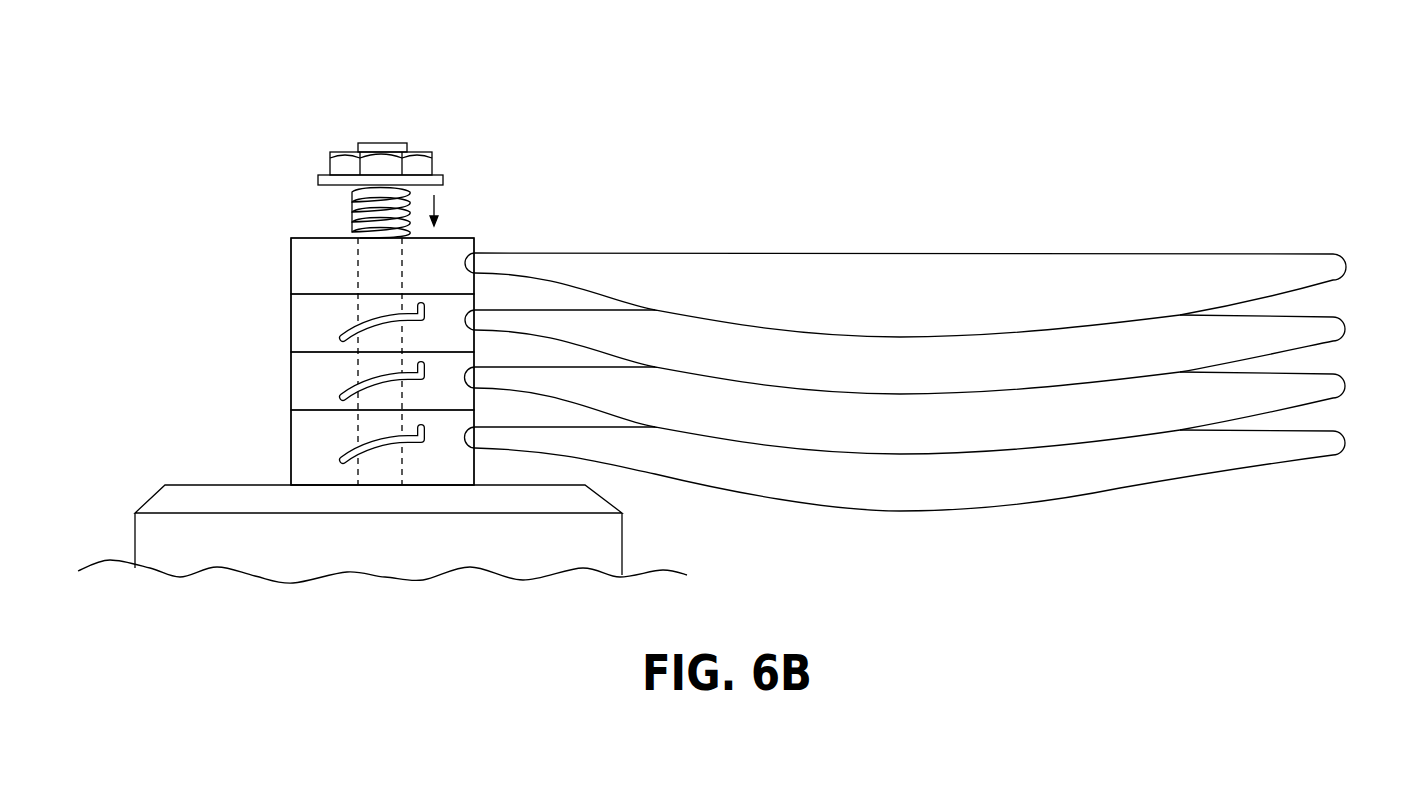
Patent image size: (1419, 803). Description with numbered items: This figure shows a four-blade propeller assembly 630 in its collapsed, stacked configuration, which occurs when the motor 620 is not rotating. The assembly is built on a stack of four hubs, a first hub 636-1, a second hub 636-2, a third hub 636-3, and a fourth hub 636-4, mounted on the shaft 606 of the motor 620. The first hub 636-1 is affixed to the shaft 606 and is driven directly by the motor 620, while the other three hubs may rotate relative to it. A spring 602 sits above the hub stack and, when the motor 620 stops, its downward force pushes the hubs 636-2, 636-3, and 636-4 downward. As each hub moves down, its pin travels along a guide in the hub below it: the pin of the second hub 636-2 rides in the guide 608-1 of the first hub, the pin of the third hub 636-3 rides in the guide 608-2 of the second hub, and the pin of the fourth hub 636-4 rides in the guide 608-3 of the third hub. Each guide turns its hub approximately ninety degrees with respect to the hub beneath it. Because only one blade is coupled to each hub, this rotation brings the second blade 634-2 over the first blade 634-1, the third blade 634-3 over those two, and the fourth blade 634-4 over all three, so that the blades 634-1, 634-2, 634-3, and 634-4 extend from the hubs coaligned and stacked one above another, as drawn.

The connector assembly 630 is at (498, 64).
The spring 602 is at (352, 212).
The shaft 606 is at (370, 305).
The first hub 636-1 is at (300, 440).
The second hub 636-2 is at (300, 377).
The third hub 636-3 is at (300, 318).
The fourth hub 636-4 is at (300, 262).
The guide 608-1 is at (424, 445).
The guide 608-2 is at (428, 380).
The guide 608-3 is at (430, 317).
The motor 620 is at (598, 540).
The first blade 634-1 is at (1311, 268).
The second blade 634-2 is at (1330, 382).
The third blade 634-3 is at (1328, 325).
The fourth blade 634-4 is at (1328, 442).